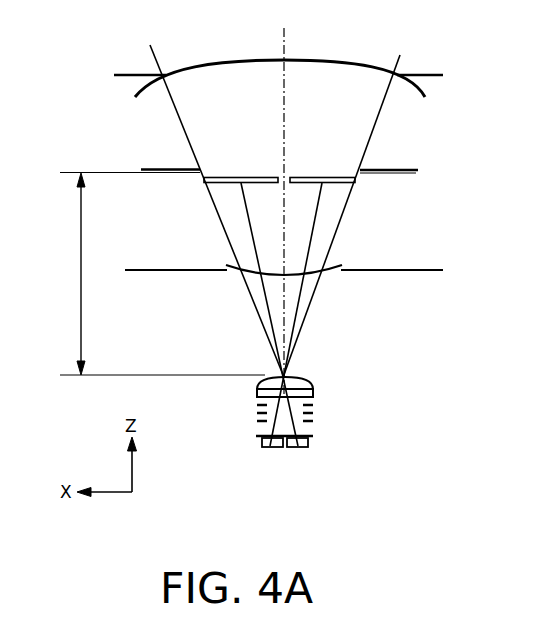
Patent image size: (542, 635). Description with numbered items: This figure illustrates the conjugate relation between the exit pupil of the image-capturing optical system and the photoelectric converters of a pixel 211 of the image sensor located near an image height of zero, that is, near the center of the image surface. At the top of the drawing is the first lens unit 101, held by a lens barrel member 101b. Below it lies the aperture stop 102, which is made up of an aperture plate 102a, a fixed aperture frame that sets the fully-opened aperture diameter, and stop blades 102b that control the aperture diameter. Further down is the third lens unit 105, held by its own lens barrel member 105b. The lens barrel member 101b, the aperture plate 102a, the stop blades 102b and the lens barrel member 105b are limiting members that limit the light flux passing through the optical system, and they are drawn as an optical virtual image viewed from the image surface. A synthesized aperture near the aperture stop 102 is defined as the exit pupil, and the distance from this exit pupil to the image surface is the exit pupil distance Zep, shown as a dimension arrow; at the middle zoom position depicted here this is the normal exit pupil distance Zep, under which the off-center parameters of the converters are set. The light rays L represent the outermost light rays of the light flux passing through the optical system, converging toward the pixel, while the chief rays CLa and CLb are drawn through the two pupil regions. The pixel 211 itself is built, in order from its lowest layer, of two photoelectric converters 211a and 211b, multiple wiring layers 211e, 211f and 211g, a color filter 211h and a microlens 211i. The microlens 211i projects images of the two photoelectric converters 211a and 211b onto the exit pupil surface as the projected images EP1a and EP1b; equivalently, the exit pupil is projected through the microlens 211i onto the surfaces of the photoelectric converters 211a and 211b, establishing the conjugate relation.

The first lens unit 101 is at (345, 62).
The lens barrel member 101b is at (407, 75).
The aperture stop 102 is at (294, 149).
The aperture plate 102a is at (402, 171).
The stop blades 102b is at (368, 168).
The projected image EP1a is at (270, 177).
The projected image EP1b is at (313, 176).
The chief ray a CLa is at (248, 212).
The chief ray b CLb is at (317, 215).
The normal exit pupil distance Zep is at (148, 274).
The third lens unit 105 is at (301, 281).
The lens barrel member 105b is at (400, 270).
The outermost light rays L is at (303, 313).
The pixel 211 is at (345, 438).
The microlens 211i is at (311, 381).
The color filter 211h is at (313, 393).
The wiring layer 211g is at (313, 406).
The wiring layer 211f is at (313, 421).
The wiring layer 211e is at (313, 437).
The photoelectric converter 211a is at (298, 448).
The photoelectric converter 211b is at (270, 448).